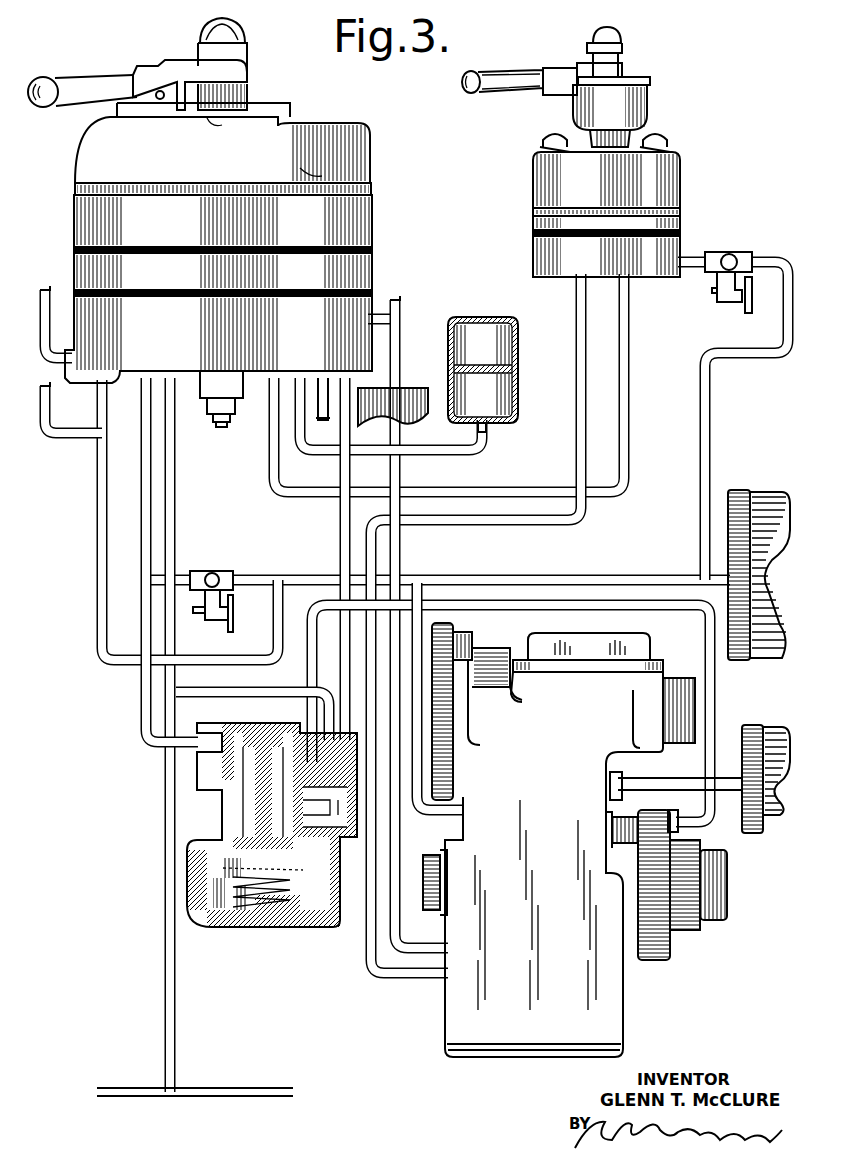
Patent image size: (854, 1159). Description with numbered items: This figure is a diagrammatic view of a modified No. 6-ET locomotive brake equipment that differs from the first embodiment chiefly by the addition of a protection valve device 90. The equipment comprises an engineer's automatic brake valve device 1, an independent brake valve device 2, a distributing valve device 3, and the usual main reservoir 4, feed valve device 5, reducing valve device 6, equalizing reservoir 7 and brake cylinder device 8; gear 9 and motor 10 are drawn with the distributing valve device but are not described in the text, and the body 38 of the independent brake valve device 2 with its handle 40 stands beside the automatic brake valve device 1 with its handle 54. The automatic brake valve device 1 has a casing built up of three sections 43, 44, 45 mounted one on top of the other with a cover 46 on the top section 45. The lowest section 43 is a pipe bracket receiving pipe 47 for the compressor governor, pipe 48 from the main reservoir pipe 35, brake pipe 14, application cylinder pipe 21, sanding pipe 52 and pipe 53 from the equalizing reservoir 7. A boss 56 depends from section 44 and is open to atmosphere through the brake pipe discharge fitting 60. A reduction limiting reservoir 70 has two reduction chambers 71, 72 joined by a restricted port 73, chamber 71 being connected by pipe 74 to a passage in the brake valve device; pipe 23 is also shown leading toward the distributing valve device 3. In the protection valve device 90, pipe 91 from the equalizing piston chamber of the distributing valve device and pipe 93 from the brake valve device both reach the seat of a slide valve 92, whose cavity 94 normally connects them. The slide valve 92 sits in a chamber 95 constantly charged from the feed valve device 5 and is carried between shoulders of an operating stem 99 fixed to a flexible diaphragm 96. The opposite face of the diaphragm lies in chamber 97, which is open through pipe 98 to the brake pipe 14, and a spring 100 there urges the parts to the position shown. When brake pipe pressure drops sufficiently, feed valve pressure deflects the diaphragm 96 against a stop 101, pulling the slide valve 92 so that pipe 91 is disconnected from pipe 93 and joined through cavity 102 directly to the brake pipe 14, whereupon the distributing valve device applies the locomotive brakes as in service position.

The engineer's automatic brake valve device 1 is at (200, 237).
The independent brake valve device 2 is at (630, 107).
The distributing valve device 3 is at (598, 1032).
The main reservoir 4 is at (745, 505).
The feed valve device 5 is at (198, 580).
The reducing valve device 6 is at (716, 259).
The equalizing reservoir 7 is at (410, 395).
The brake cylinder device 8 is at (768, 817).
The gear 9 is at (662, 947).
The motor 10 is at (483, 648).
The brake pipe 14 is at (136, 1090).
The application cylinder pipe 21 is at (272, 441).
The pipe 23 is at (374, 972).
The main reservoir pipe 35 is at (476, 580).
The container 38 is at (548, 253).
The handle 40 is at (498, 80).
The casing section 43 is at (92, 310).
The casing section 44 is at (90, 270).
The casing section 45 is at (90, 228).
The cover 46 is at (90, 157).
The pipe 47 is at (42, 332).
The pipe 48 is at (98, 448).
The sanding pipe 52 is at (323, 424).
The pipe 53 is at (392, 330).
The handle 54 is at (82, 74).
The boss 56 is at (213, 390).
The brake pipe discharge fitting 60 is at (222, 428).
The reduction limiting reservoir 70 is at (147, 458).
The reduction chamber 71 is at (490, 388).
The reduction chamber 72 is at (496, 329).
The restricted port 73 is at (490, 369).
The pipe 74 is at (421, 456).
The protection valve device 90 is at (235, 828).
The pipe 91 is at (704, 618).
The slide valve 92 is at (224, 778).
The pipe 93 is at (342, 523).
The cavity 94 is at (258, 808).
The chamber 95 is at (215, 825).
The flexible diaphragm 96 is at (218, 875).
The chamber 97 is at (222, 918).
The pipe 98 is at (302, 692).
The operating stem 99 is at (212, 842).
The spring 100 is at (244, 914).
The stop 101 is at (272, 914).
The cavity 102 is at (246, 736).